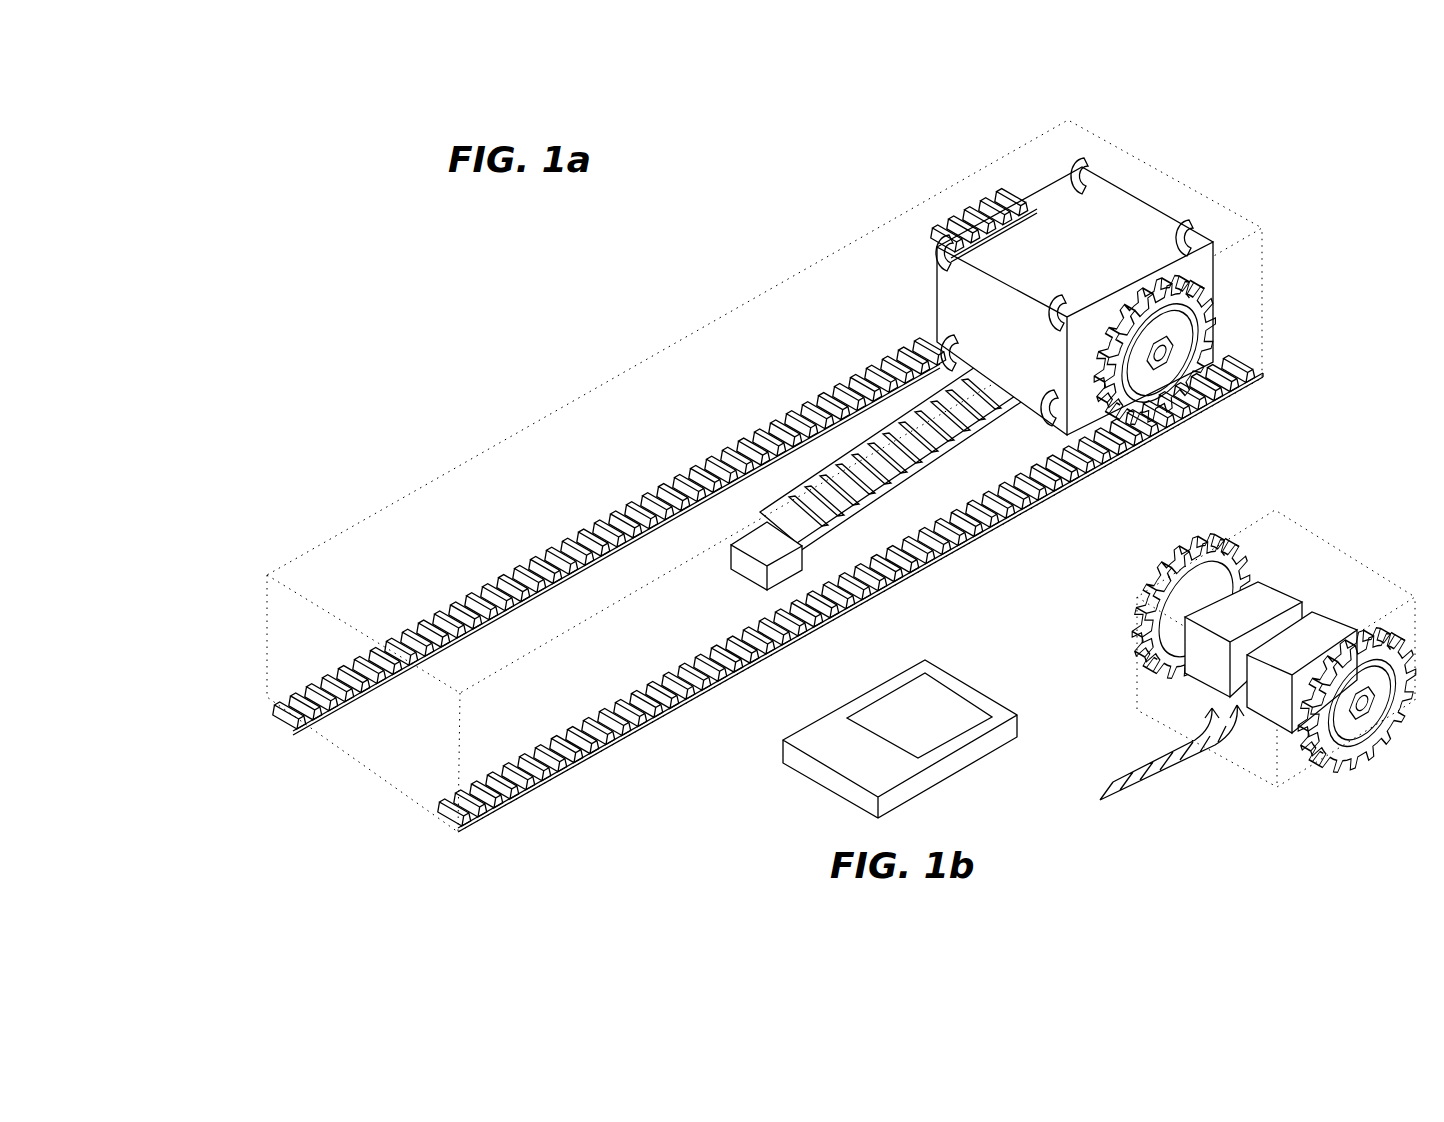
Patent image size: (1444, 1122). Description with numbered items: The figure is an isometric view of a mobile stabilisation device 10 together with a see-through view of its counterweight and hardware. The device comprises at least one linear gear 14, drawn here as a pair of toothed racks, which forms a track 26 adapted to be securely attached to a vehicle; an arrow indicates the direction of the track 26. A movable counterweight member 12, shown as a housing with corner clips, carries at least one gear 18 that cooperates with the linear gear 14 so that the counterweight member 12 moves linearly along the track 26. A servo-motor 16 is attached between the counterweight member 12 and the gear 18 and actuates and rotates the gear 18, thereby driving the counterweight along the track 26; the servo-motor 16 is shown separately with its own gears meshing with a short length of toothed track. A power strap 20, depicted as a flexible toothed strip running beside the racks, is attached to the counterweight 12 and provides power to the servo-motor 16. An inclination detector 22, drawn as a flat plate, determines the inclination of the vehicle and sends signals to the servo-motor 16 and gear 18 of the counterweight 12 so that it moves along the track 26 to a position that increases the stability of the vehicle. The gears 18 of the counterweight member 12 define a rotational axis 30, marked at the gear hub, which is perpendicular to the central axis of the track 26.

In FIG. 1a, the mobile stabilisation device 10 is at (612, 375).
In FIG. 1a, the movable counterweight member 12 is at (1092, 248).
In FIG. 1a, the linear gear 14 is at (590, 718).
In FIG. 1b, the servo-motor 16 is at (1330, 633).
In FIG. 1a, the gear 18 is at (1210, 300).
In FIG. 1a, the power strap 20 is at (900, 440).
In FIG. 1b, the inclination detector 22 is at (909, 737).
In FIG. 1a, the track 26 is at (236, 735).
In FIG. 1a, the rotational axis 30 is at (1165, 357).